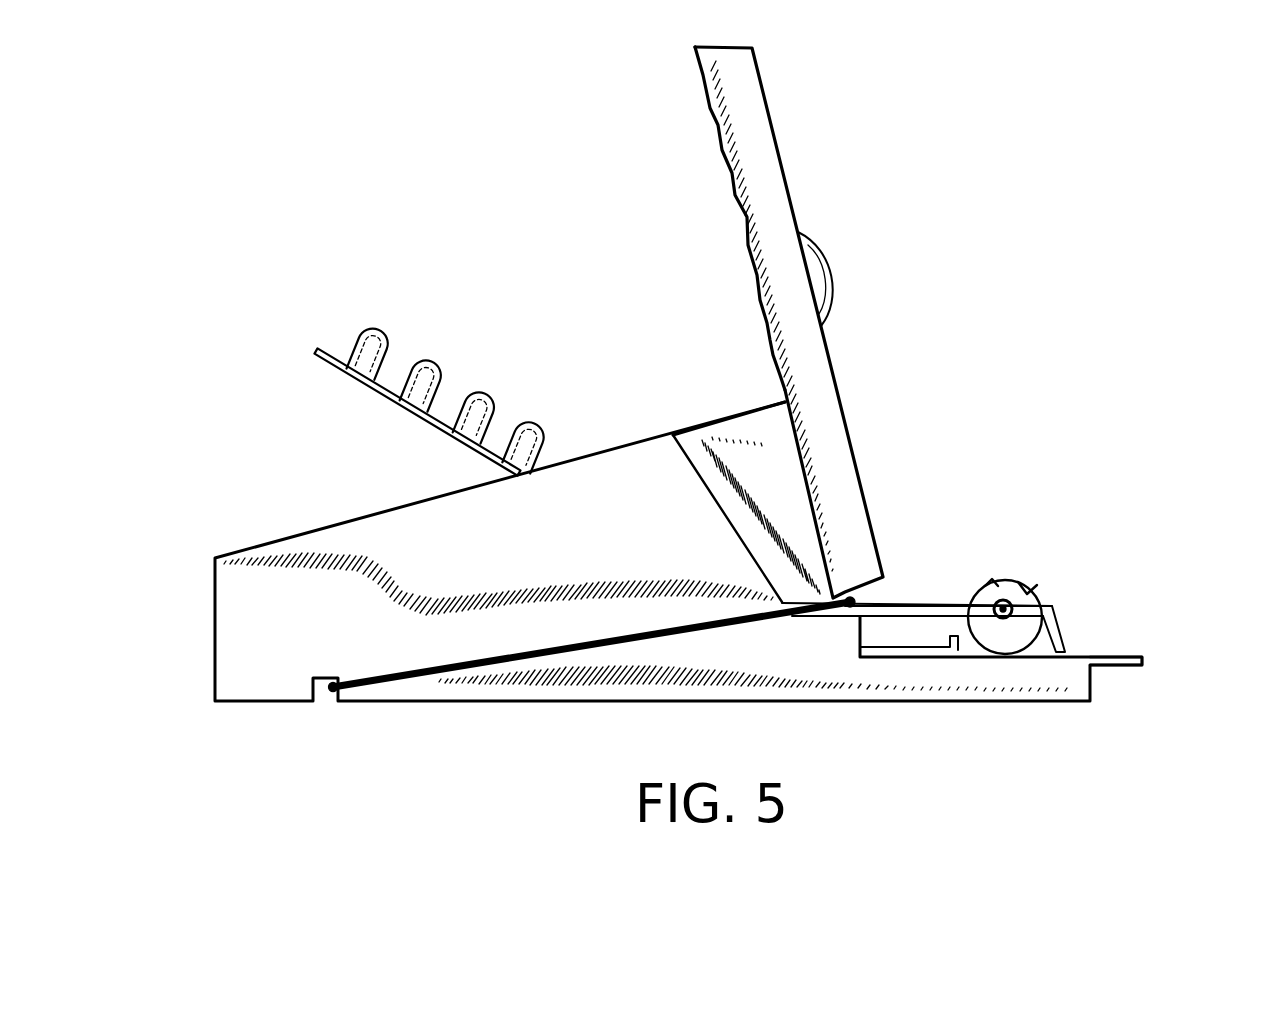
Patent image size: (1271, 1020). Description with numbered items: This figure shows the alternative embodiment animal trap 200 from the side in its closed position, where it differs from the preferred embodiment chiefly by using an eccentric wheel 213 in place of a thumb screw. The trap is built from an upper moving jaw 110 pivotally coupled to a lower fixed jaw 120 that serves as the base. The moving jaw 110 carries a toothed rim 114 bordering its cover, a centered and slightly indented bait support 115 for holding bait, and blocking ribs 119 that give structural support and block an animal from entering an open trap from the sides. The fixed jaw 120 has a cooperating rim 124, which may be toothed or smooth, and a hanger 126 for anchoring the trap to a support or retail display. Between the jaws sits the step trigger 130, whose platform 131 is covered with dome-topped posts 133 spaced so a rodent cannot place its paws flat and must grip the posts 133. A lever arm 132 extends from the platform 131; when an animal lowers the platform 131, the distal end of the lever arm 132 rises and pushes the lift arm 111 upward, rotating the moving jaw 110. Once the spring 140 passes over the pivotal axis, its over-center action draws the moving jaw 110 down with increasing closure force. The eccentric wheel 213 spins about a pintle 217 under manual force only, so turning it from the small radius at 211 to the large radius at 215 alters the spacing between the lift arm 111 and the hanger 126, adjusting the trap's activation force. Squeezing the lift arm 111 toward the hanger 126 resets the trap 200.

The upper moving jaw 110 is at (778, 124).
The lift arm 111 is at (1058, 628).
The toothed rim 114 is at (710, 108).
The bait support 115 is at (820, 272).
The blocking ribs 119 is at (768, 412).
The lower fixed jaw 120 is at (205, 607).
The rim 124 is at (498, 569).
The hanger 126 is at (1128, 660).
The step trigger 130 is at (410, 382).
The platform 131 is at (363, 380).
The lever arm 132 is at (928, 650).
The posts 133 is at (357, 340).
The spring 140 is at (417, 689).
The animal trap 200 is at (1122, 256).
The small radius 211 is at (995, 585).
The eccentric wheel 213 is at (1050, 591).
The large radius 215 is at (1028, 583).
The pintle 217 is at (997, 604).